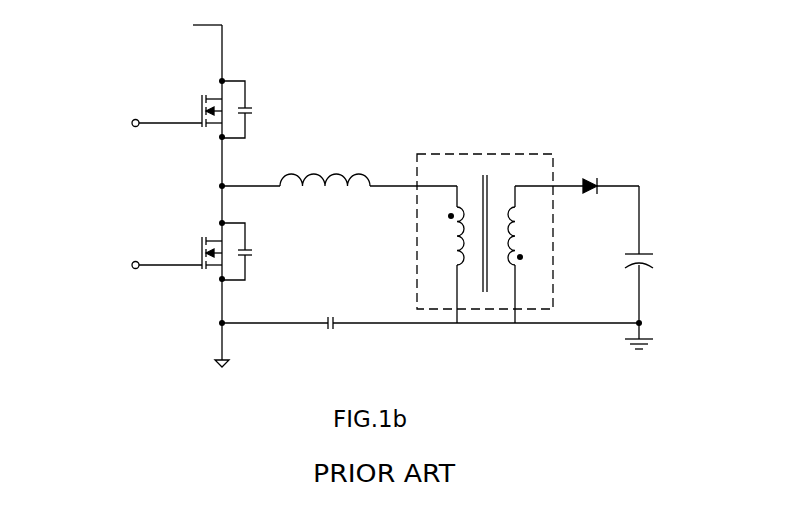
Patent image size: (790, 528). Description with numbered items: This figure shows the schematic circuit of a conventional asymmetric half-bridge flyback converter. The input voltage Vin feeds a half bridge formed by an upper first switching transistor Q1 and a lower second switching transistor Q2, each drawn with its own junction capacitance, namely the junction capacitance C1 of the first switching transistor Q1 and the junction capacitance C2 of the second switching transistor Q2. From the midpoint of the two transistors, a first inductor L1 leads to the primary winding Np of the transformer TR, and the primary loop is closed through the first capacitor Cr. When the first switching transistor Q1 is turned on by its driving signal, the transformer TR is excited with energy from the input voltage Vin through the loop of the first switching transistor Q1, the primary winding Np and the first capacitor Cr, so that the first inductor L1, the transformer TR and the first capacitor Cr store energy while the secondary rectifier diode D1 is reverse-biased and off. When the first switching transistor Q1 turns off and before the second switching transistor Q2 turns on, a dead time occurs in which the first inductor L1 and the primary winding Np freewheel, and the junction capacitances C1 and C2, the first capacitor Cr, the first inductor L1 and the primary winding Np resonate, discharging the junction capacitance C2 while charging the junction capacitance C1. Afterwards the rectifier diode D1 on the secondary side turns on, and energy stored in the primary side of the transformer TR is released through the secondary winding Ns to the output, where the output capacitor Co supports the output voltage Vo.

The input voltage Vin is at (175, 31).
The first switching transistor Q1 is at (198, 107).
The second switching transistor Q2 is at (198, 249).
The junction capacitance of the first switching transistor C1 is at (253, 109).
The junction capacitance of the second switching transistor C2 is at (253, 251).
The first inductor L1 is at (325, 195).
The first capacitor Cr is at (334, 307).
The transformer TR is at (459, 226).
The primary winding Np is at (444, 254).
The secondary winding Ns is at (529, 254).
The secondary rectifier diode D1 is at (592, 174).
The output voltage Vo is at (654, 177).
The output capacitor Co is at (655, 254).